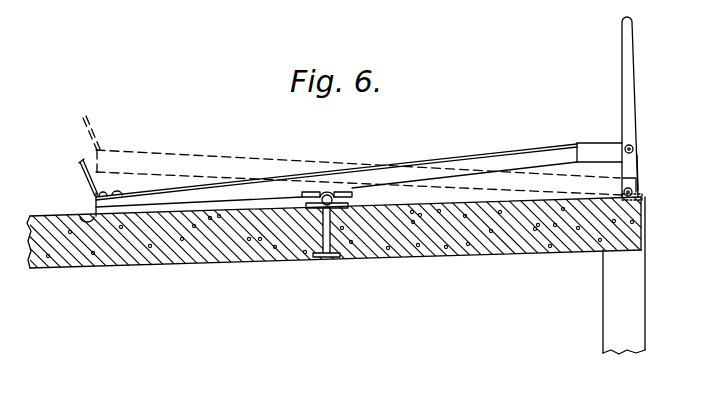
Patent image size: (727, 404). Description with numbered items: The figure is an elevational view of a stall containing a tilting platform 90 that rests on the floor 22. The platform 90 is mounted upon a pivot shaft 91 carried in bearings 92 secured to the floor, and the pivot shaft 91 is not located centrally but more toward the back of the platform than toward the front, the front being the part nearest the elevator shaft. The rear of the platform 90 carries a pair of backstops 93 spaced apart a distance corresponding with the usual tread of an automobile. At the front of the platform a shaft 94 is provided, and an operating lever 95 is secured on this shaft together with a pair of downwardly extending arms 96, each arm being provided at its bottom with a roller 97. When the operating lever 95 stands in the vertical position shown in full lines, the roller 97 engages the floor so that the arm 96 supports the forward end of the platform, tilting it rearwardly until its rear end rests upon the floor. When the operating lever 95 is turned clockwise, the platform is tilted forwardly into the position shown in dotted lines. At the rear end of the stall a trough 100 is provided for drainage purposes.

The concrete floor slab 22 is at (436, 252).
The tilting platform 90 is at (478, 150).
The pivot shaft 91 is at (323, 209).
The bearings 92 is at (318, 205).
The backstops 93 is at (78, 163).
The shaft 94 is at (633, 148).
The operating lever 95 is at (632, 73).
The downwardly extending arms 96 is at (639, 168).
The roller 97 is at (636, 192).
The trough 100 is at (88, 220).